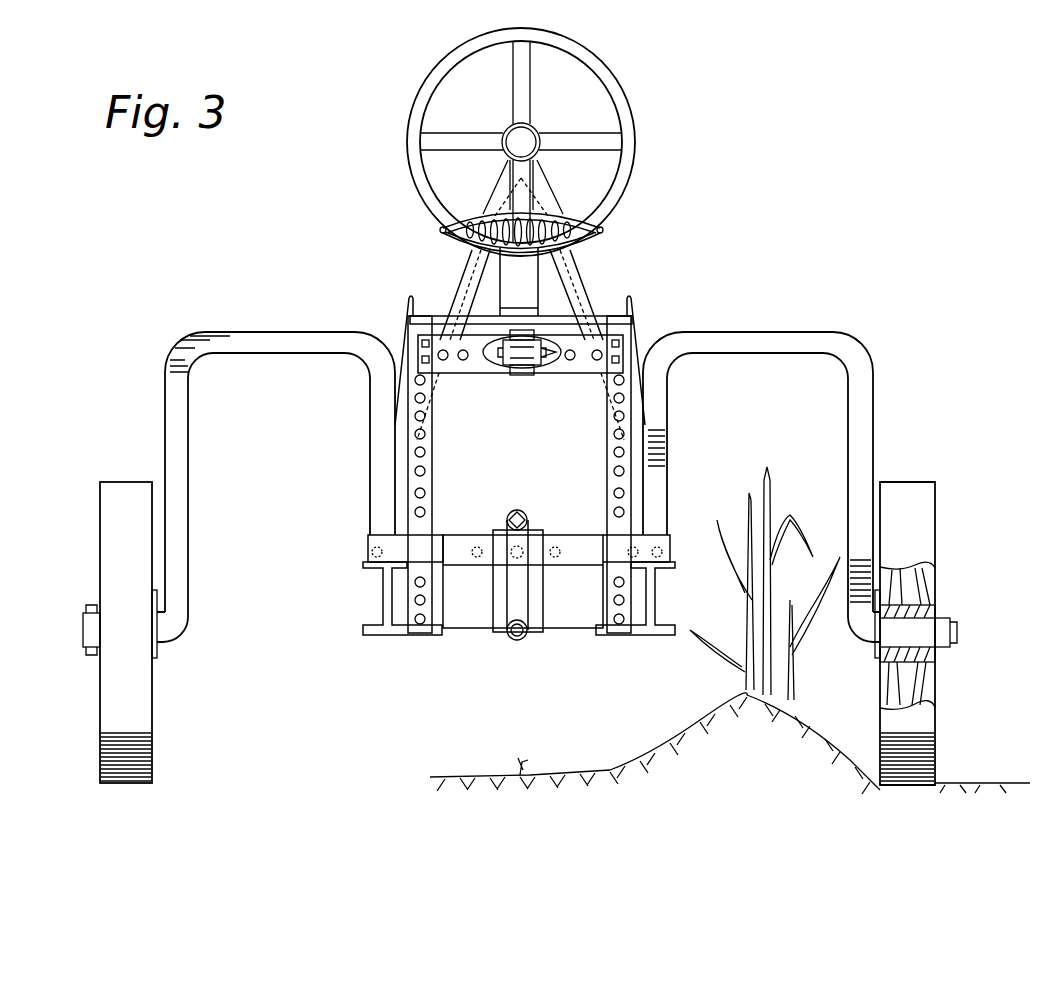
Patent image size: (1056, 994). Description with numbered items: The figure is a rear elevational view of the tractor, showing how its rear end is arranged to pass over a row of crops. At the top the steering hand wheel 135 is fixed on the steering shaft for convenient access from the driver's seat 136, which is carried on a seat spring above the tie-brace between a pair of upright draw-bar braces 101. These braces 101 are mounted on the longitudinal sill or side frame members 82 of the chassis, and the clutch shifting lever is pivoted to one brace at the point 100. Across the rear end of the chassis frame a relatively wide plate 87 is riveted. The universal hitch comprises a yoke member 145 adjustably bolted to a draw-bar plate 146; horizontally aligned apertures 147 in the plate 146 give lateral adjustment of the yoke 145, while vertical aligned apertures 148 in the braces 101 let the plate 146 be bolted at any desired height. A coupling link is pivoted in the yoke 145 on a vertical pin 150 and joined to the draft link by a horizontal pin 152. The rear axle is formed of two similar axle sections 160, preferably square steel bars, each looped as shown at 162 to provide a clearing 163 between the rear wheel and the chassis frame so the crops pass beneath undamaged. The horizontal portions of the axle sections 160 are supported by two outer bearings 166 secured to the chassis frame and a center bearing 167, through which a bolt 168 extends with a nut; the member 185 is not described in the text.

The steering hand wheel 135 is at (633, 122).
The driver's seat 136 is at (590, 232).
The upright draw-bar brace 101 is at (412, 320).
The pivot of clutch lever 100 is at (598, 552).
The loop of axle section 162 is at (830, 345).
The clearing 163 is at (204, 391).
The axle section 160 is at (374, 436).
The vertical aligned apertures 148 is at (425, 455).
The draw-bar plate 146 is at (568, 368).
The horizontally aligned apertures 147 is at (463, 359).
The yoke member 145 is at (508, 366).
The vertical pin 150 is at (524, 376).
The horizontal pin 152 is at (540, 358).
The outer bearing 166 is at (440, 548).
The plate 87 is at (563, 628).
The beam member 185 is at (483, 508).
The center bearing 167 is at (500, 606).
The bolt 168 is at (524, 545).
The side frame member 82 is at (384, 597).